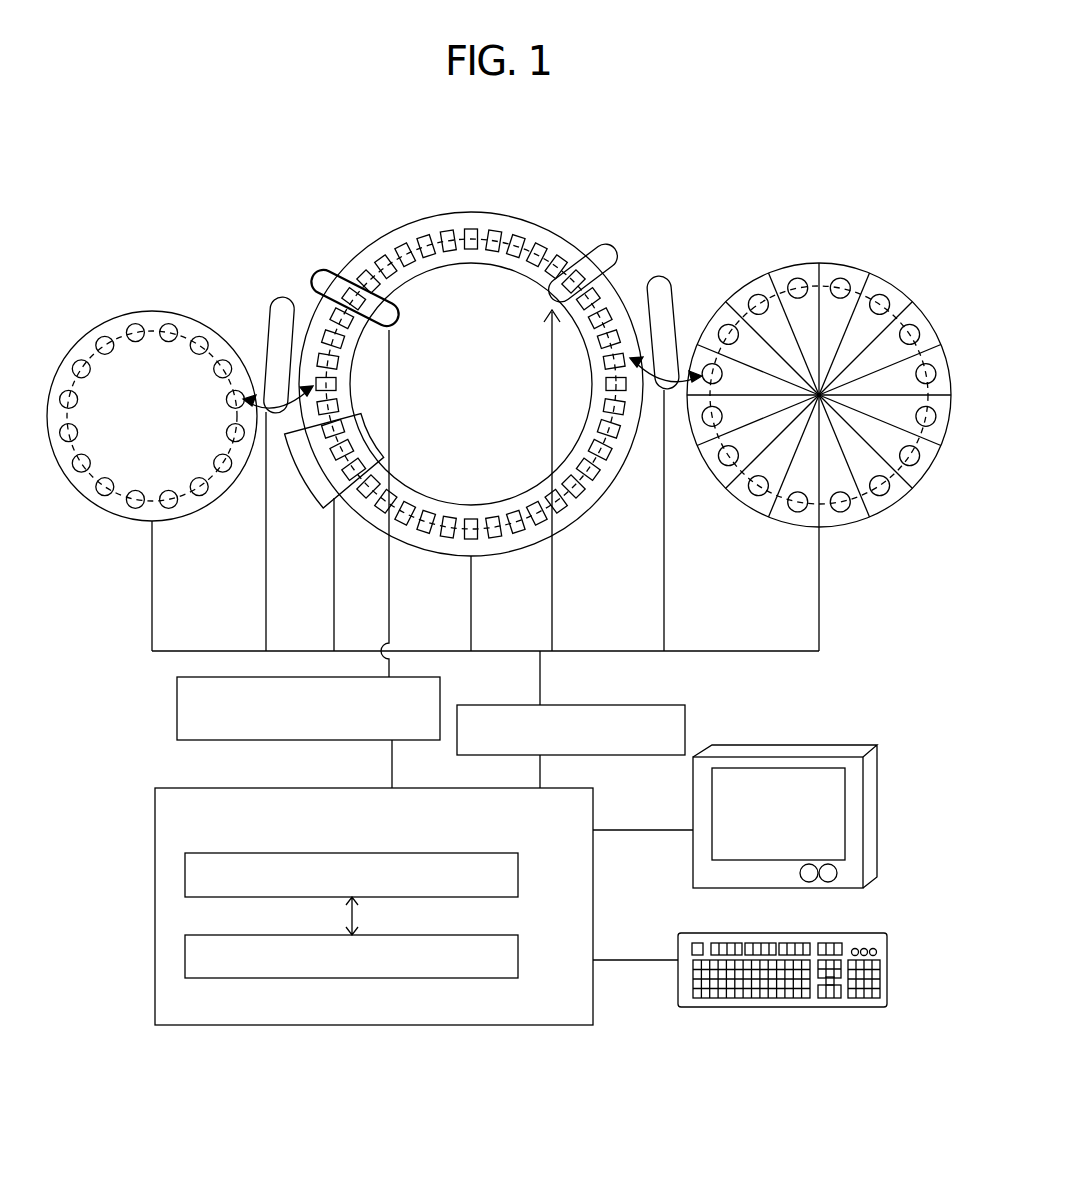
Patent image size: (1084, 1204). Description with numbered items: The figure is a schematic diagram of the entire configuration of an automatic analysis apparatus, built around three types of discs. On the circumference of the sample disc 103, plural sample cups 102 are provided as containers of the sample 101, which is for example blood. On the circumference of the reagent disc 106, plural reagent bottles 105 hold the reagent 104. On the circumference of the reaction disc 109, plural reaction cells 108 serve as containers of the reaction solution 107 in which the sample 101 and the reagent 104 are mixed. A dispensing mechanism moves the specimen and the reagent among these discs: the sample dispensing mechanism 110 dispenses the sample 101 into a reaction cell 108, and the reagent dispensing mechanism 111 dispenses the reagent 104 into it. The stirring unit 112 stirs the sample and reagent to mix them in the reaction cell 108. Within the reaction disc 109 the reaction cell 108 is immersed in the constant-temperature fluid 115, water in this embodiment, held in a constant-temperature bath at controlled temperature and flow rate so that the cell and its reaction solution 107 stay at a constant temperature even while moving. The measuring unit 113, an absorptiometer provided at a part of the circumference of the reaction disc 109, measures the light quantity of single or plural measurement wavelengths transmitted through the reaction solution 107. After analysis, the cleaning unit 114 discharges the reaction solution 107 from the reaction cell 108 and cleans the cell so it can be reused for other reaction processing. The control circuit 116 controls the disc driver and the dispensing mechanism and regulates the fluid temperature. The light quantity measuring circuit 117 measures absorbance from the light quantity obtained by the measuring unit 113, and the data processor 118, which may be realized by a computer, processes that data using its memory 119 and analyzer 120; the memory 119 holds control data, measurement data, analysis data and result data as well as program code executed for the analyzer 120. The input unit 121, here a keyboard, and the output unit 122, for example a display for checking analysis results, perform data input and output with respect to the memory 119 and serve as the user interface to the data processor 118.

The sample 101 is at (170, 323).
The sample cup 102 is at (137, 323).
The sample disc 103 is at (110, 322).
The reagent 104 is at (840, 277).
The reagent bottle 105 is at (798, 276).
The reagent disc 106 is at (762, 283).
The reaction solution 107 is at (495, 232).
The reaction cell 108 is at (470, 229).
The reaction disc 109 is at (448, 215).
The sample dispensing mechanism 110 is at (272, 300).
The reagent dispensing mechanism 111 is at (670, 292).
The stirring unit 112 is at (612, 262).
The measuring unit 113 is at (330, 275).
The cleaning unit 114 is at (322, 507).
The constant-temperature fluid 115 is at (557, 250).
The control circuit 116 is at (680, 705).
The light quantity measuring circuit 117 is at (177, 712).
The data processor 118 is at (334, 905).
The memory 119 is at (506, 853).
The analyzer 120 is at (506, 935).
The input unit 121 is at (795, 935).
The output unit 122 is at (795, 749).